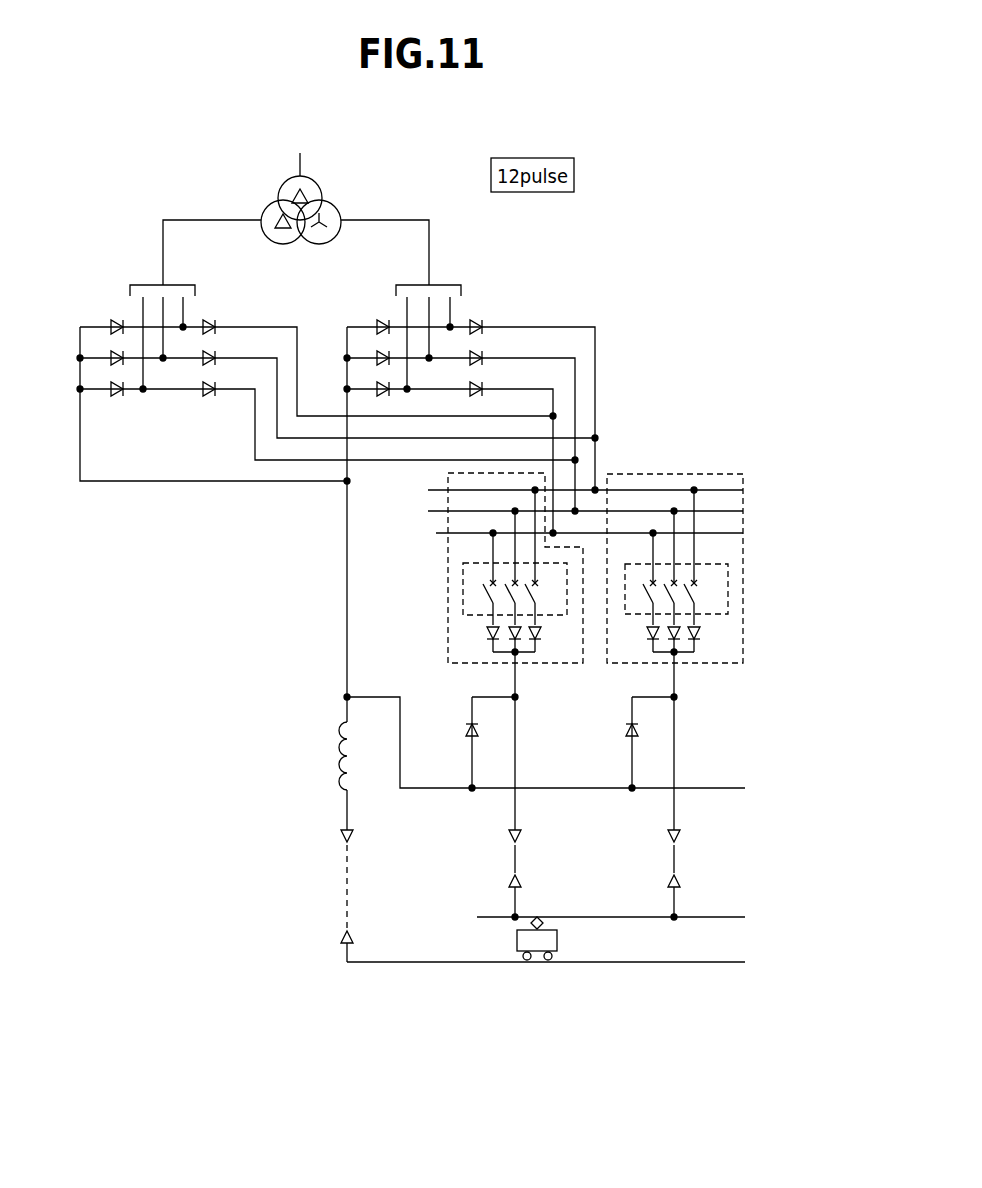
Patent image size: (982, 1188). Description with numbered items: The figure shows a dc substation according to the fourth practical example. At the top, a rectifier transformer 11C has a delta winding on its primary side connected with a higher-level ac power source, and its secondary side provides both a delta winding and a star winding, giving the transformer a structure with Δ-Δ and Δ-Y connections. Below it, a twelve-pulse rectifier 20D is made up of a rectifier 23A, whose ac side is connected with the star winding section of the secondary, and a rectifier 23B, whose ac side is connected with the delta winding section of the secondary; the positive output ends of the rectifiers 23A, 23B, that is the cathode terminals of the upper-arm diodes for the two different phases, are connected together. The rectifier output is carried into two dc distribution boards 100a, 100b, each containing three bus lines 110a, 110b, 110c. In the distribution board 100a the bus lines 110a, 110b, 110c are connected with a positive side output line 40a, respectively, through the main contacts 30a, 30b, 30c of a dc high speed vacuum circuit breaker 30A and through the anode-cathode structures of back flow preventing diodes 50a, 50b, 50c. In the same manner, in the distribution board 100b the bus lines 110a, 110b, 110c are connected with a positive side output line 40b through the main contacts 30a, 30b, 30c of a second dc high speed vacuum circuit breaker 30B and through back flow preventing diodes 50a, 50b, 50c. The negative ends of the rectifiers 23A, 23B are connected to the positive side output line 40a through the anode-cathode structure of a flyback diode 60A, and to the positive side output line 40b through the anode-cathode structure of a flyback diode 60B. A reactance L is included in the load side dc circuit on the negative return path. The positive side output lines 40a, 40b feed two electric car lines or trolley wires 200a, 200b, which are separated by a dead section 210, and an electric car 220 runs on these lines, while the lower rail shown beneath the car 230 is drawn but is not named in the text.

The rectifier transformer 11C is at (278, 200).
The 12-pulse rectifier 20D is at (468, 455).
The rectifier 23A is at (483, 323).
The rectifier 23B is at (78, 372).
The dc distribution board 100a is at (591, 632).
The dc distribution board 100b is at (694, 596).
The bus line 110a is at (428, 491).
The bus line 110b is at (428, 512).
The bus line 110c is at (436, 533).
The dc high speed vacuum circuit breaker 30A is at (463, 585).
The dc high speed vacuum circuit breaker 30B is at (728, 590).
The main contact 30a is at (530, 592).
The main contact 30b is at (509, 596).
The main contact 30c is at (487, 595).
The back flow preventing diode 50a is at (538, 646).
The back flow preventing diode 50b is at (519, 650).
The back flow preventing diode 50c is at (490, 642).
The positive side output line 40a is at (503, 657).
The positive side output line 40b is at (678, 657).
The flyback diode 60A is at (468, 732).
The flyback diode 60B is at (627, 732).
The reactance L is at (542, 762).
The electric car line 200a is at (484, 918).
The electric car line 200b is at (712, 918).
The dead section 210 is at (567, 924).
The electric car 220 is at (557, 942).
The rail 230 is at (610, 963).